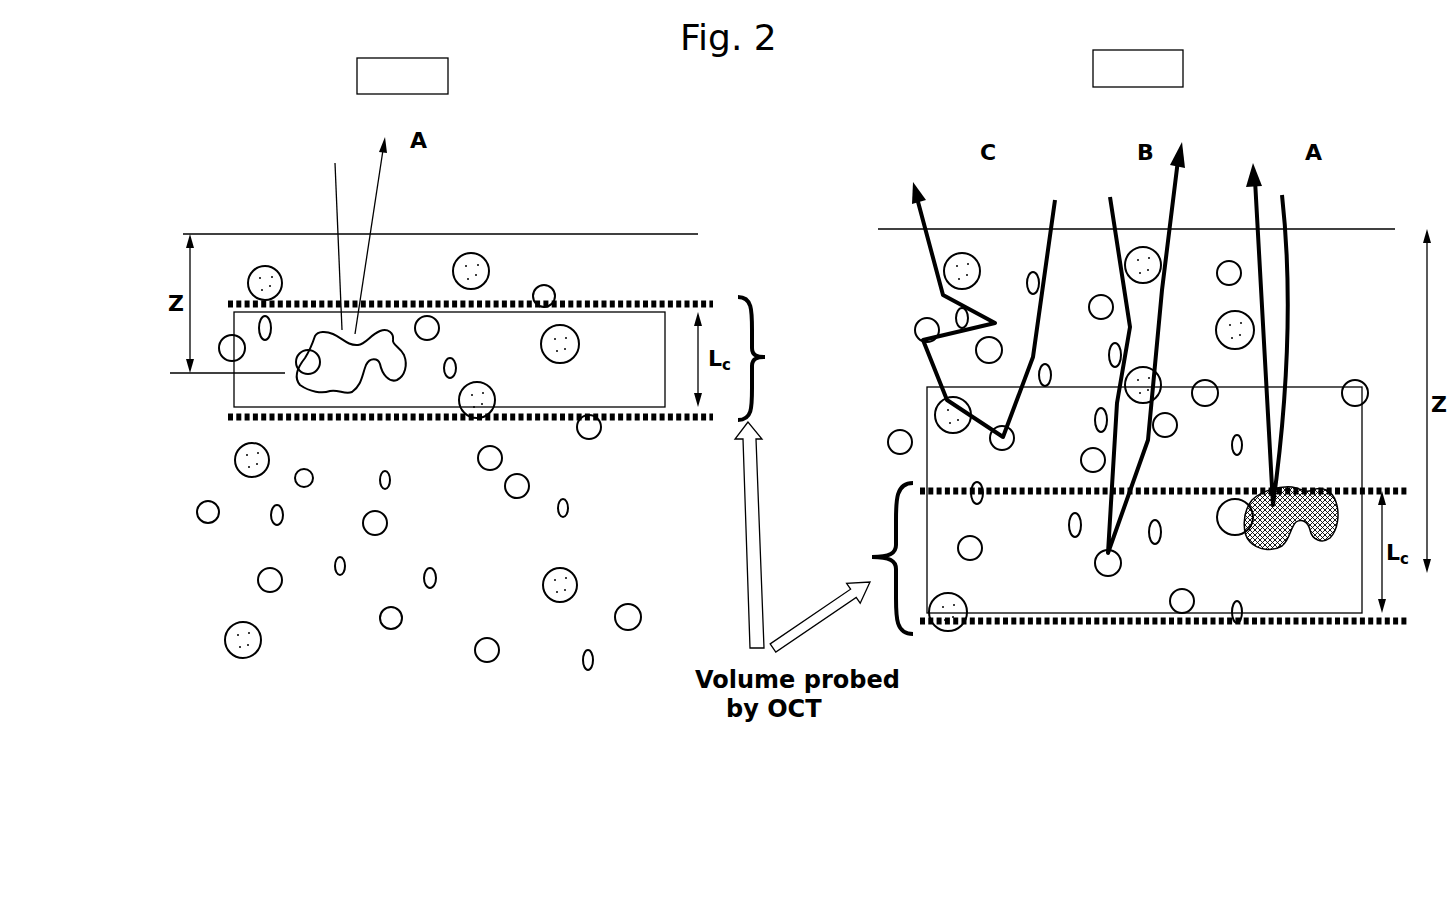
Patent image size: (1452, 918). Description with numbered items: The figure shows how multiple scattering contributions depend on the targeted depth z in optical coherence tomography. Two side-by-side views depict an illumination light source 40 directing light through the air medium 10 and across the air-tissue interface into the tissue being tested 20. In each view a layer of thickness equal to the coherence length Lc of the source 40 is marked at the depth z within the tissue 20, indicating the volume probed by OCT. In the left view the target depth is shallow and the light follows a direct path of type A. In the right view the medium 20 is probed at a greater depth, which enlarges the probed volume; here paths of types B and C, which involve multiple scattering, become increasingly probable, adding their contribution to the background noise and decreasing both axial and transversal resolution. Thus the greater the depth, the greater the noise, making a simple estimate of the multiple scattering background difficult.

The air medium 10 is at (248, 192).
The tissue being tested 20 is at (625, 234).
The source 40 is at (372, 58).